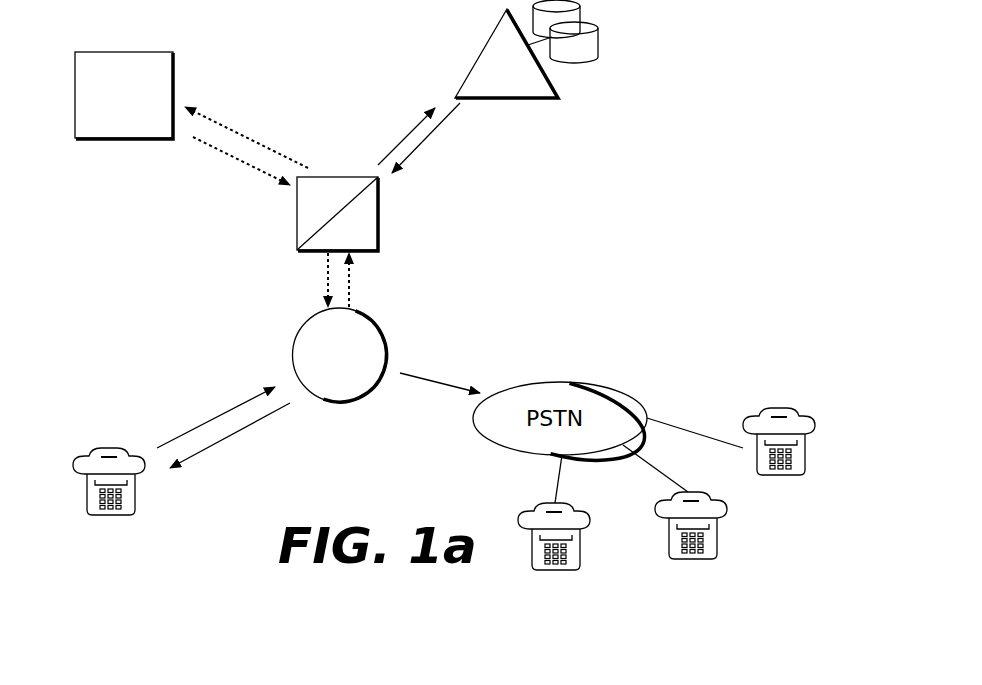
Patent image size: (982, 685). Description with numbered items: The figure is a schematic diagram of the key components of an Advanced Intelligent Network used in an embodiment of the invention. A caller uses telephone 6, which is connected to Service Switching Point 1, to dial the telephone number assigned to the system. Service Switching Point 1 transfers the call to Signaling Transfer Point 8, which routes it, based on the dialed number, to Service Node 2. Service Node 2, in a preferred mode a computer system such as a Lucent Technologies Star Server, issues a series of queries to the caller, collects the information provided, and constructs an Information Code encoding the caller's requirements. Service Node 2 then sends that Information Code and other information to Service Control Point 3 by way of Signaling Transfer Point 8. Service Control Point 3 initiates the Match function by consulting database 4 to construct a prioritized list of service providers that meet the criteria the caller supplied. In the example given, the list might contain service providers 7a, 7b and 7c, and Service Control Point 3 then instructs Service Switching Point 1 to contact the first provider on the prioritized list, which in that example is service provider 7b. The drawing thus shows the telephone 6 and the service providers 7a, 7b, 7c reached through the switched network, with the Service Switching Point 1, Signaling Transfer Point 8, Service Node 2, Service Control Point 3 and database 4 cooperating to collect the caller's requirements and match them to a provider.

The Service Switching Point 1 is at (343, 402).
The Service Node 2 is at (75, 90).
The Service Control Point 3 is at (492, 34).
The database 4 is at (598, 36).
The telephone 6 is at (87, 492).
The service provider 7a is at (570, 572).
The service provider 7b is at (717, 538).
The service provider 7c is at (782, 408).
The Signaling Transfer Point 8 is at (378, 220).